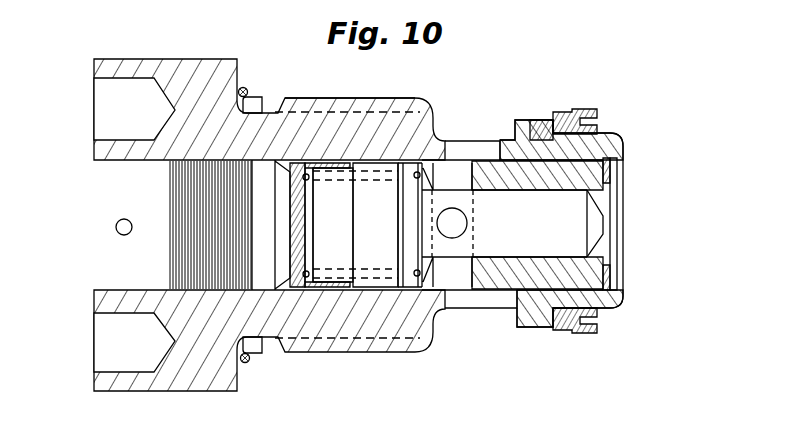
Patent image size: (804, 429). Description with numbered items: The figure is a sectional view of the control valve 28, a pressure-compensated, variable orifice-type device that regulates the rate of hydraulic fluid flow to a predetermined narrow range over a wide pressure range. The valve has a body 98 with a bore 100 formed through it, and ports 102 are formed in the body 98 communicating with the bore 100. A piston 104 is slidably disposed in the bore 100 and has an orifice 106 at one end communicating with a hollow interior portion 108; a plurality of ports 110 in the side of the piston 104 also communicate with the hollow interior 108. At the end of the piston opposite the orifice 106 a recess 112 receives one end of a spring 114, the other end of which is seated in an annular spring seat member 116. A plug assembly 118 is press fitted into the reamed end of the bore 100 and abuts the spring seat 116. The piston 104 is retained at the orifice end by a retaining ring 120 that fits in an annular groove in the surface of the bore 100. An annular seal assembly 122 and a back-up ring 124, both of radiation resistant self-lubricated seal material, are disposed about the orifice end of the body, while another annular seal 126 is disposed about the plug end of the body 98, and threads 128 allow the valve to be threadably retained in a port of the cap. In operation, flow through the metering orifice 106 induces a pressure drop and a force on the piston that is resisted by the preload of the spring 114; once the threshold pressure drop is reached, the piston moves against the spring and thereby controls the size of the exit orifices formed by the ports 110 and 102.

The control valve 28 is at (443, 93).
The body 98 is at (205, 59).
The threads 128 is at (404, 91).
The annular seal 126 is at (247, 364).
The plug assembly 118 is at (168, 205).
The annular spring seat member 116 is at (310, 287).
The spring 114 is at (368, 283).
The recess 112 is at (397, 290).
The ports 110 is at (440, 290).
The ports 102 is at (447, 152).
The hollow interior portion 108 is at (477, 265).
The piston 104 is at (530, 285).
The back-up ring 124 is at (557, 120).
The annular seal assembly 122 is at (583, 120).
The bore 100 is at (615, 175).
The orifice 106 is at (605, 224).
The retaining ring 120 is at (615, 277).